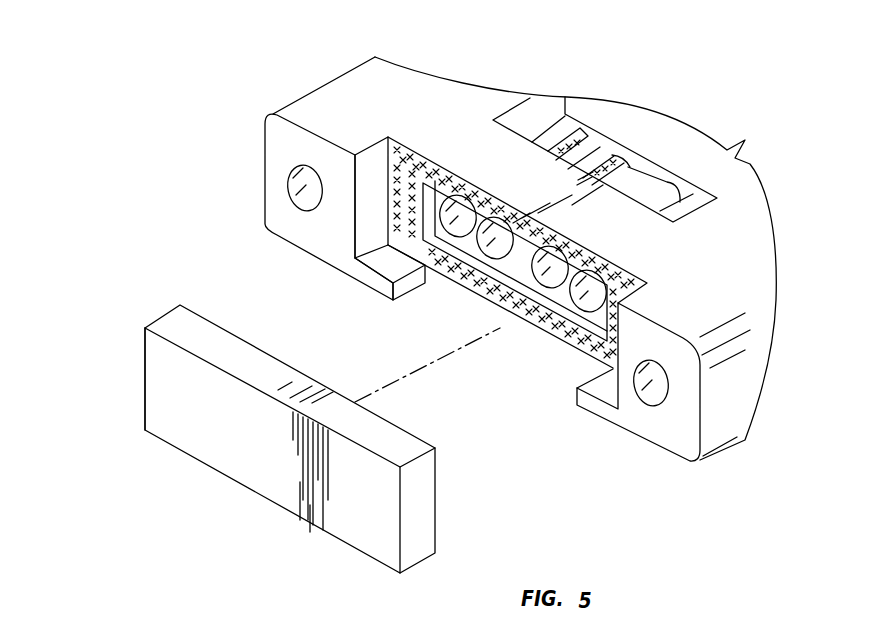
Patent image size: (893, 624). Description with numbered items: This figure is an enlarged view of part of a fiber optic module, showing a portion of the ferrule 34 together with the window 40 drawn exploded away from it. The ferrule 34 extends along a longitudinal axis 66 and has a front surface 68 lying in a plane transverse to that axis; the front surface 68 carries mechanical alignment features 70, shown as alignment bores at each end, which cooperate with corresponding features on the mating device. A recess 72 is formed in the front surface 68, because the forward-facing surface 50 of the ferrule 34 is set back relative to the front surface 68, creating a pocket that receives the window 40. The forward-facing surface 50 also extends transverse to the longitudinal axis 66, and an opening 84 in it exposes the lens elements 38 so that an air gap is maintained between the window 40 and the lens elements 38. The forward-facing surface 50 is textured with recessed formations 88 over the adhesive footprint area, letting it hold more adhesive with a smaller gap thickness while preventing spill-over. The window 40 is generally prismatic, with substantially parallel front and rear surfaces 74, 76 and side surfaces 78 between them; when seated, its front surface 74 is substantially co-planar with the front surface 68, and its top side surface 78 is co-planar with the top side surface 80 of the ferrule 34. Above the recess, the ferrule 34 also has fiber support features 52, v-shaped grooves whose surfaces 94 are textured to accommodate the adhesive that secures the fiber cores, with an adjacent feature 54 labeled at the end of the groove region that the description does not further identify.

The ferrule 34 is at (302, 86).
The lens elements 38 is at (492, 252).
The window 40 is at (137, 359).
The forward-facing surface 50 is at (402, 154).
The fiber support features 52 is at (557, 136).
The channel 54 is at (643, 178).
The longitudinal axis 66 is at (436, 360).
The front surface 68 is at (283, 138).
The mechanical alignment features 70 is at (287, 186).
The recess 72 is at (371, 166).
The front surface of window 74 is at (194, 420).
The rear surface of window 76 is at (254, 346).
The side surfaces of window 78 is at (183, 326).
The side surfaces of ferrule 80 is at (470, 132).
The opening 84 is at (548, 237).
The formations 88 is at (627, 276).
The textured surfaces 94 is at (585, 144).